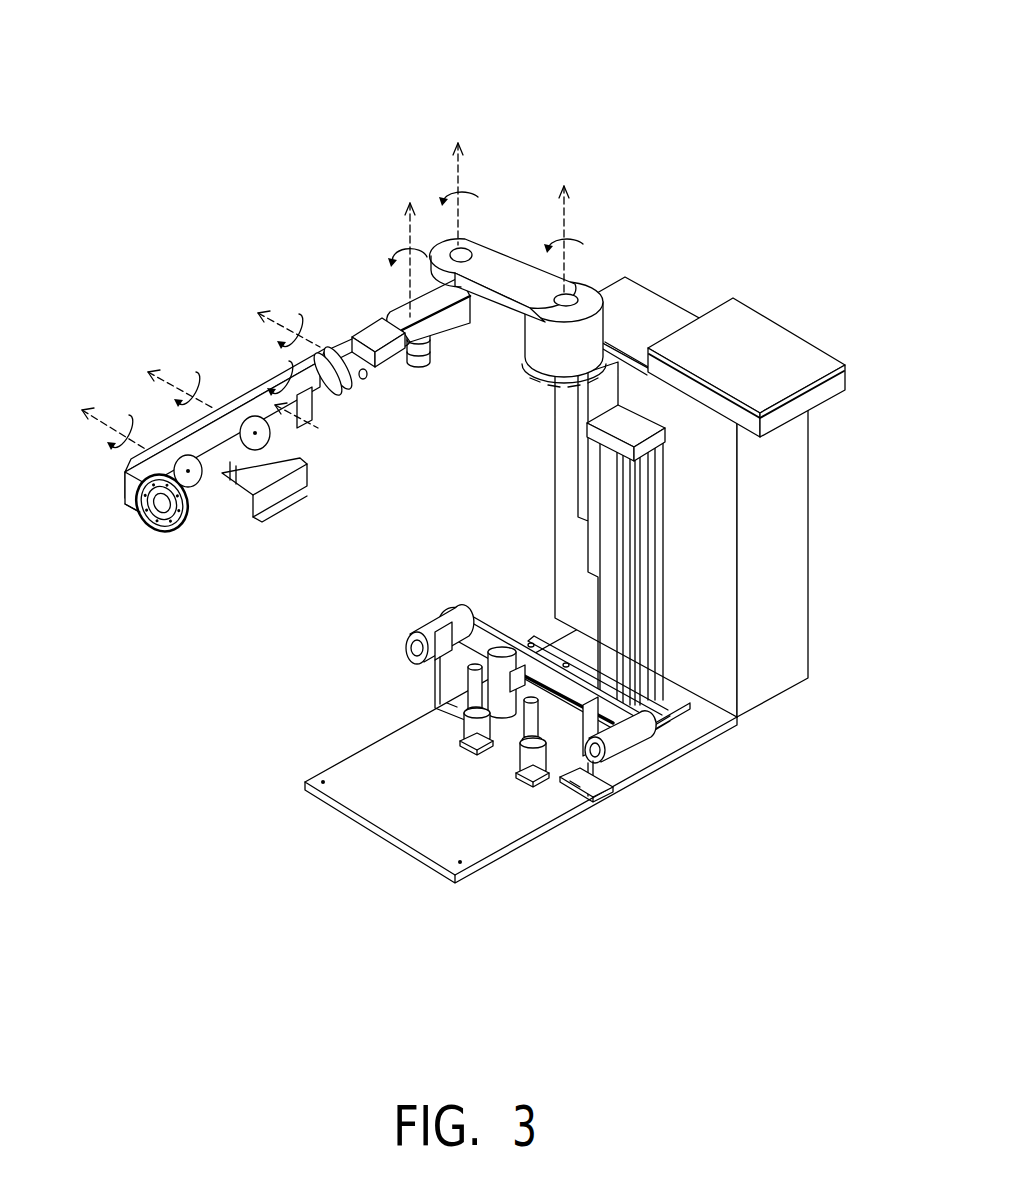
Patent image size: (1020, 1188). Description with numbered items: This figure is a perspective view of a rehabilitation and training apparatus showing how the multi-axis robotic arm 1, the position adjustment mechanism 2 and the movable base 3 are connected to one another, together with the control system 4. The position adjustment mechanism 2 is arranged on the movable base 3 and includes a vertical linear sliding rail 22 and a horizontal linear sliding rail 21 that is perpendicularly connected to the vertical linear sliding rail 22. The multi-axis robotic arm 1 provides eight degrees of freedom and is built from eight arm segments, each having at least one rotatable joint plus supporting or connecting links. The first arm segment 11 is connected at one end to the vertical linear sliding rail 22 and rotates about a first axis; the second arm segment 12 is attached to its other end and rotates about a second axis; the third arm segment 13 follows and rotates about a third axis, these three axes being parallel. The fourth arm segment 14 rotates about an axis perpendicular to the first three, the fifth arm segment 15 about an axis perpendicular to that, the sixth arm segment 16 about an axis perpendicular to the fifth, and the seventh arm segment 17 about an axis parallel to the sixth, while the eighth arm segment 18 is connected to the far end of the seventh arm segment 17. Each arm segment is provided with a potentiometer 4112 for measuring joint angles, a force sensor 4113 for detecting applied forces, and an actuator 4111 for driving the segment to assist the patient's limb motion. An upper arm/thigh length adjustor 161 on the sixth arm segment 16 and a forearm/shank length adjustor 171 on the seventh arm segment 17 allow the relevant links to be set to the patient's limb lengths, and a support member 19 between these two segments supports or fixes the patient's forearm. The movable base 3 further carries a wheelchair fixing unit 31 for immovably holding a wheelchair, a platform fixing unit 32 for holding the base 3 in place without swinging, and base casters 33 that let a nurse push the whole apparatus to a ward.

The multi-axis robotic arm 1 is at (448, 342).
The first arm segment 11 is at (596, 280).
The second arm segment 12 is at (470, 250).
The third arm segment 13 is at (422, 342).
The fourth arm segment 14 is at (347, 337).
The fifth arm segment 15 is at (313, 367).
The sixth arm segment 16 is at (264, 395).
The upper arm/thigh length adjustor 161 is at (303, 412).
The seventh arm segment 17 is at (124, 485).
The forearm/shank length adjustor 171 is at (262, 500).
The eighth arm segment 18 is at (165, 537).
The support member 19 is at (280, 515).
The position adjustment mechanism 2 is at (731, 504).
The horizontal linear sliding rail 21 is at (655, 685).
The vertical linear sliding rail 22 is at (650, 542).
The movable base 3 is at (511, 783).
The wheelchair fixing unit 31 is at (615, 745).
The platform fixing unit 32 is at (527, 761).
The base casters 33 is at (490, 863).
The control system 4 is at (778, 347).
The actuator 4111 is at (472, 252).
The potentiometer 4112 is at (464, 250).
The force sensor 4113 is at (132, 505).